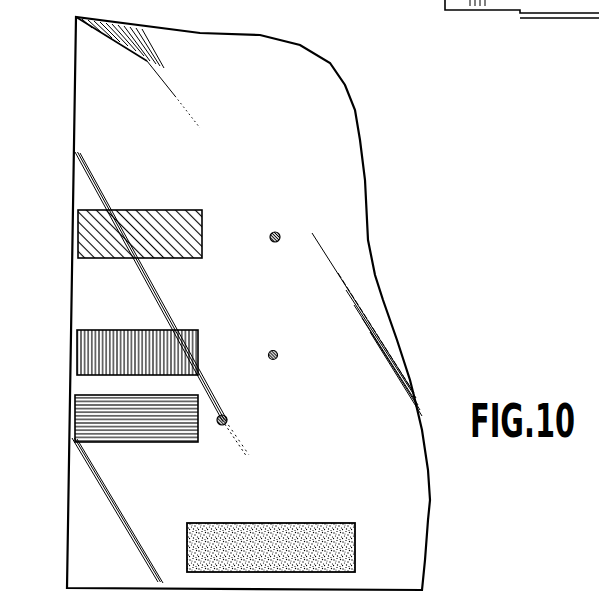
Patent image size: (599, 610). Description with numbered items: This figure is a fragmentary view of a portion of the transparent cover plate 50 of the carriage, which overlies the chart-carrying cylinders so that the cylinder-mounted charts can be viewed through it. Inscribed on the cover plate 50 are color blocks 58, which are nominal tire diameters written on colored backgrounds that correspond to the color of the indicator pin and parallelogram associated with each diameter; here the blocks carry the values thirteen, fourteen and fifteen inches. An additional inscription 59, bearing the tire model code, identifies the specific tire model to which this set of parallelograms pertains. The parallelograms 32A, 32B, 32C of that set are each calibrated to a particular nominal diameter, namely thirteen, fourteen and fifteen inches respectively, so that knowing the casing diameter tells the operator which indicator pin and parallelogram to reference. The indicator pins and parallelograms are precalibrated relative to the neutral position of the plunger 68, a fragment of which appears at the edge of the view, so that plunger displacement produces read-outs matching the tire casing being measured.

The cover plate 50 is at (97, 166).
The color blocks 58 is at (202, 214).
The additional inscription 59 is at (333, 523).
The parallelogram 32A is at (226, 424).
The parallelogram 32B is at (277, 352).
The parallelogram 32C is at (279, 233).
The plunger 68 is at (578, 0).